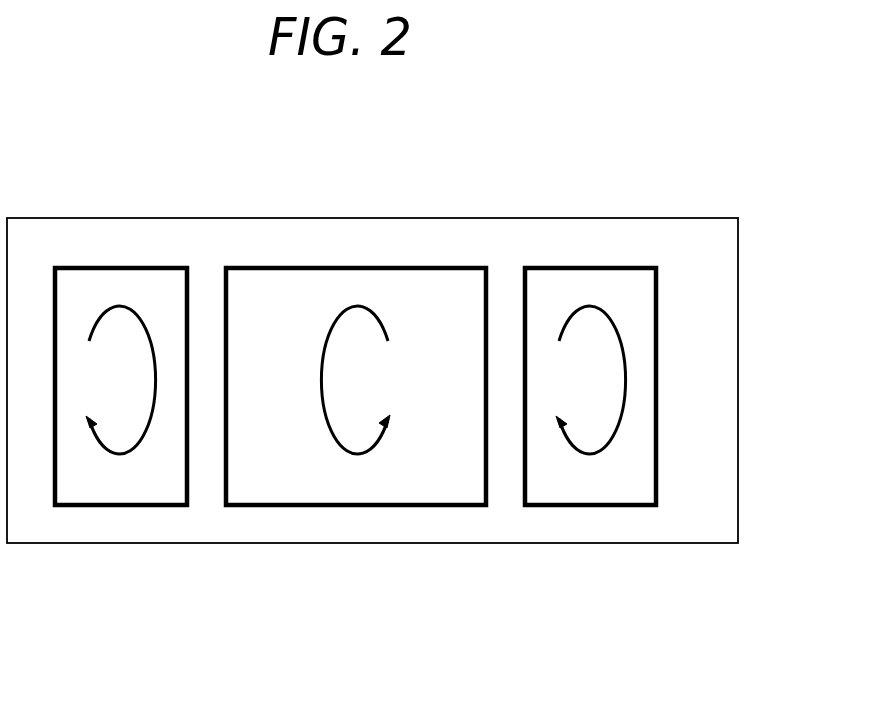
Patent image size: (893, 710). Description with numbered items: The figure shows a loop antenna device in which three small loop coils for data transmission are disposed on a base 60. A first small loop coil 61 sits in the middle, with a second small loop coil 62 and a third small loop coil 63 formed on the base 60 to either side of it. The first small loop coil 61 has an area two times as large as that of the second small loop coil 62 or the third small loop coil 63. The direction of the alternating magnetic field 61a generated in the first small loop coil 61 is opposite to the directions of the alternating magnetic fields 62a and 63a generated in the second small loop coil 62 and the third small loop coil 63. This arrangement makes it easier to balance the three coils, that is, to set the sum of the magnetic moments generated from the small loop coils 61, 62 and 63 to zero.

The base 60 is at (738, 285).
The first small loop coil 61 is at (353, 505).
The alternating magnetic field 61a is at (357, 307).
The second small loop coil 62 is at (130, 505).
The alternating magnetic field 62a is at (119, 307).
The third small loop coil 63 is at (590, 505).
The alternating magnetic field 63a is at (591, 307).